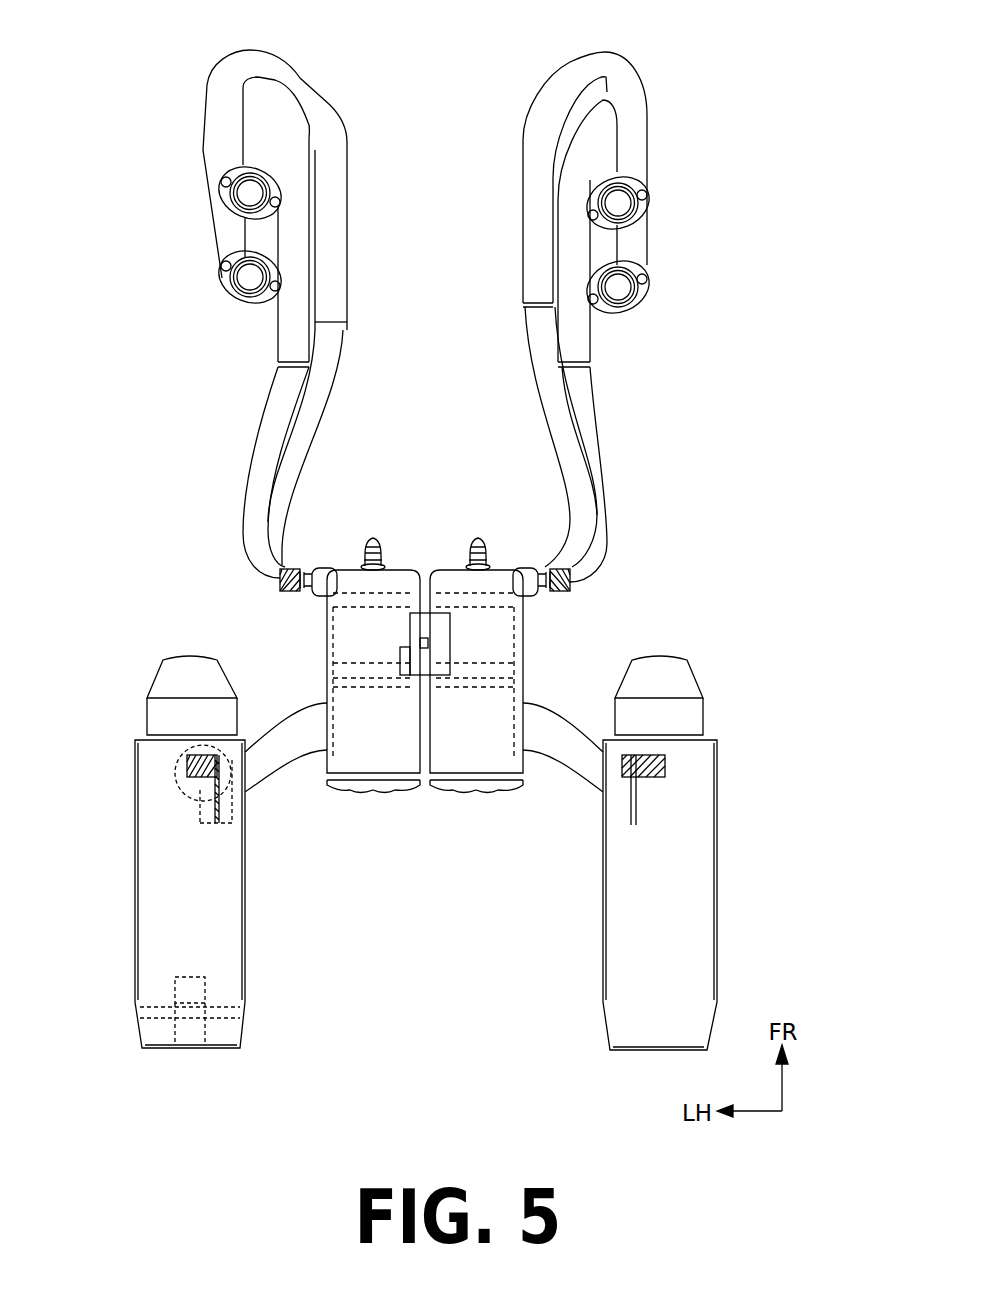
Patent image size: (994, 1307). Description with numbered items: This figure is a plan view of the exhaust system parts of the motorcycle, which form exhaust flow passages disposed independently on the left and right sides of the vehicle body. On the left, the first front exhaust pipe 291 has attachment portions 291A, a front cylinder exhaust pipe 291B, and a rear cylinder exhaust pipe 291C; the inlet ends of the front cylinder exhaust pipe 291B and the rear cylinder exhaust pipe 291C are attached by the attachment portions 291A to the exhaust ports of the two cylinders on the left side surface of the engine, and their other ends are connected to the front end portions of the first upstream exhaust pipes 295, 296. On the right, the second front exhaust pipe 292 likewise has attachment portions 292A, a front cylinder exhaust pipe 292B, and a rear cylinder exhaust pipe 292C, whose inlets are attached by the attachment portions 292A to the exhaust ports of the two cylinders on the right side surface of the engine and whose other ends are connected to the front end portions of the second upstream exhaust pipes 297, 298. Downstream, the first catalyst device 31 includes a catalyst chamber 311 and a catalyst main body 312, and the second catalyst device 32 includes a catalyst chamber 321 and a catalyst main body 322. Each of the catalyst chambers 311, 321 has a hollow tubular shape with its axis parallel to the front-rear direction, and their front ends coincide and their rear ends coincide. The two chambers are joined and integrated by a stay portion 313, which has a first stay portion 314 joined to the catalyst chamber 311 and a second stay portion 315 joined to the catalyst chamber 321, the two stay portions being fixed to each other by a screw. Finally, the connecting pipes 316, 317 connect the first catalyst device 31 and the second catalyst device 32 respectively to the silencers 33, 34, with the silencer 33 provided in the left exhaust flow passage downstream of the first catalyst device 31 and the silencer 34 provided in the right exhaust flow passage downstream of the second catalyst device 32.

The first front exhaust pipe 291 is at (273, 184).
The attachment portions 291A is at (222, 193).
The front cylinder exhaust pipe 291B is at (245, 55).
The rear cylinder exhaust pipe 291C is at (277, 148).
The second front exhaust pipe 292 is at (608, 184).
The attachment portions 292A is at (652, 200).
The front cylinder exhaust pipe 292B is at (612, 58).
The rear cylinder exhaust pipe 292C is at (603, 128).
The first upstream exhaust pipe 295 is at (323, 424).
The first upstream exhaust pipe 296 is at (277, 413).
The second upstream exhaust pipe 297 is at (553, 442).
The second upstream exhaust pipe 298 is at (577, 395).
The first catalyst device 31 is at (326, 675).
The catalyst chamber 311 is at (378, 768).
The catalyst main body 312 is at (325, 627).
The stay portion 313 is at (448, 650).
The first stay portion 314 is at (450, 617).
The second stay portion 315 is at (410, 617).
The connecting pipe 316 is at (284, 765).
The connecting pipe 317 is at (568, 768).
The second catalyst device 32 is at (533, 693).
The catalyst chamber 321 is at (486, 768).
The catalyst main body 322 is at (523, 628).
The silencer 33 is at (134, 885).
The silencer 34 is at (718, 900).